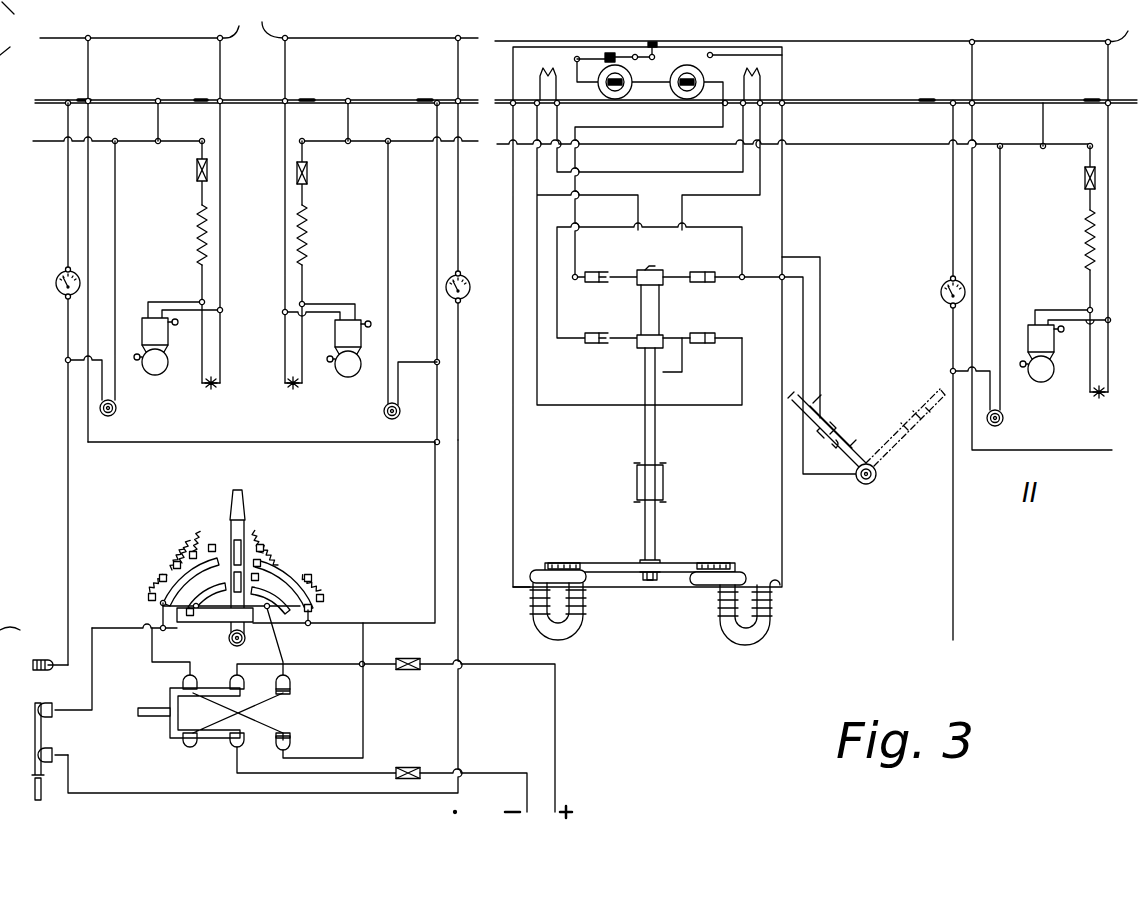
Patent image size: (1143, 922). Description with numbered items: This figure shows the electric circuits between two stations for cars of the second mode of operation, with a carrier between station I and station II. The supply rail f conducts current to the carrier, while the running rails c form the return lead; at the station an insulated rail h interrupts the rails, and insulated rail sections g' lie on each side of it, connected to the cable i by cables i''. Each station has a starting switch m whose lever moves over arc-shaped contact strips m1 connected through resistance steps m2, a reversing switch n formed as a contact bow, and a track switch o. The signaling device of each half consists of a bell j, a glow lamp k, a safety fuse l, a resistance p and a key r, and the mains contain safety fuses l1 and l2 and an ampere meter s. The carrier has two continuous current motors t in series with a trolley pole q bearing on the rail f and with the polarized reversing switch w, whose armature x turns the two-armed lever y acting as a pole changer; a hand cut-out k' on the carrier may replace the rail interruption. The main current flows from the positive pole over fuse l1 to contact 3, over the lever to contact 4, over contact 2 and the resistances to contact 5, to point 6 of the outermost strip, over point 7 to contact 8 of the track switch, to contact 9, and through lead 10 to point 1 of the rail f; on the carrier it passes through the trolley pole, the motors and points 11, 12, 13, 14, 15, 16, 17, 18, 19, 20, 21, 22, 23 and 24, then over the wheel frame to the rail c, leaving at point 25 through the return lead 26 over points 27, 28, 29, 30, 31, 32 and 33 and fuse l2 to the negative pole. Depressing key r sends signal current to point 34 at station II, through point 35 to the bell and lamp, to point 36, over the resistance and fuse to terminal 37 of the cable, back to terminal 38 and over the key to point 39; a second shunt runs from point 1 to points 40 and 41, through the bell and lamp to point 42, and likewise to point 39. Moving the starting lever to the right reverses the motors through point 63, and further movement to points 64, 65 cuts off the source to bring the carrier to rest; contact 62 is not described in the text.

The supply rail f is at (866, 42).
The insulated rail section g' is at (586, 86).
The insulated rail h is at (258, 98).
The running rails c is at (855, 104).
The cable i is at (563, 131).
The cable i'' is at (612, 123).
The safety fuse l is at (197, 185).
The resistance p is at (196, 240).
The ampere meter s is at (58, 287).
The bell j is at (155, 375).
The glow lamp k is at (658, 400).
The key r is at (116, 410).
The hand cut-out k' is at (866, 436).
The continuous current motors t is at (608, 68).
The trolley pole q is at (652, 54).
The two-armed lever y is at (622, 332).
The armature x is at (614, 564).
The polarized reversing switch w is at (532, 618).
The starting switch m is at (235, 498).
The arc-shaped contact strips m1 is at (157, 577).
The resistance steps m2 is at (171, 540).
The reversing switch n is at (152, 717).
The track switch o is at (35, 794).
The station I is at (247, 713).
The safety fuse l1 is at (410, 670).
The safety fuse l2 is at (410, 770).
The point of rail f 1 is at (458, 38).
The contact of starting switch 2 is at (148, 600).
The contact of reversing switch 3 is at (241, 681).
The contact of reversing switch 4 is at (196, 680).
The contact of starting switch 5 is at (213, 546).
The point of outermost contact strip 6 is at (160, 605).
The point 7 is at (160, 630).
The contact of track switch 8 is at (46, 706).
The contact of track switch 9 is at (50, 752).
The lead 10 is at (458, 490).
The point of motor circuit 11 is at (573, 59).
The point of motor circuit 12 is at (603, 86).
The point of motor circuit 13 is at (624, 80).
The point of motor circuit 14 is at (672, 88).
The point of motor circuit 15 is at (698, 81).
The point of motor circuit 16 is at (575, 280).
The point of motor circuit 17 is at (715, 336).
The point of motor circuit 18 is at (636, 350).
The point of motor circuit 19 is at (682, 195).
The point of motor circuit 20 is at (638, 195).
The point of motor circuit 21 is at (647, 270).
The point of motor circuit 22 is at (705, 272).
The point of motor circuit 23 is at (785, 272).
The point of motor circuit 24 is at (714, 52).
The point of running rail 25 is at (437, 102).
The return lead 26 is at (458, 245).
The point of reversing switch 27 is at (308, 625).
The point of reversing switch 28 is at (189, 616).
The point of reversing switch 29 is at (198, 610).
The point of reversing switch 30 is at (268, 610).
The point of reversing switch 31 is at (285, 696).
The point of reversing switch 32 is at (190, 747).
The point of reversing switch 33 is at (239, 748).
The point at station II 34 is at (1106, 41).
The point at station II 35 is at (1110, 320).
The point at station II 36 is at (1088, 309).
The terminal of cable i 37 is at (1000, 146).
The terminal of cable i 38 is at (389, 141).
The point of return lead 39 is at (435, 360).
The point 40 is at (285, 38).
The point 41 is at (282, 313).
The point 42 is at (303, 303).
The contact 62 is at (262, 547).
The point of starting switch 63 is at (258, 578).
The point of starting switch 64 is at (260, 563).
The point of starting switch 65 is at (324, 600).